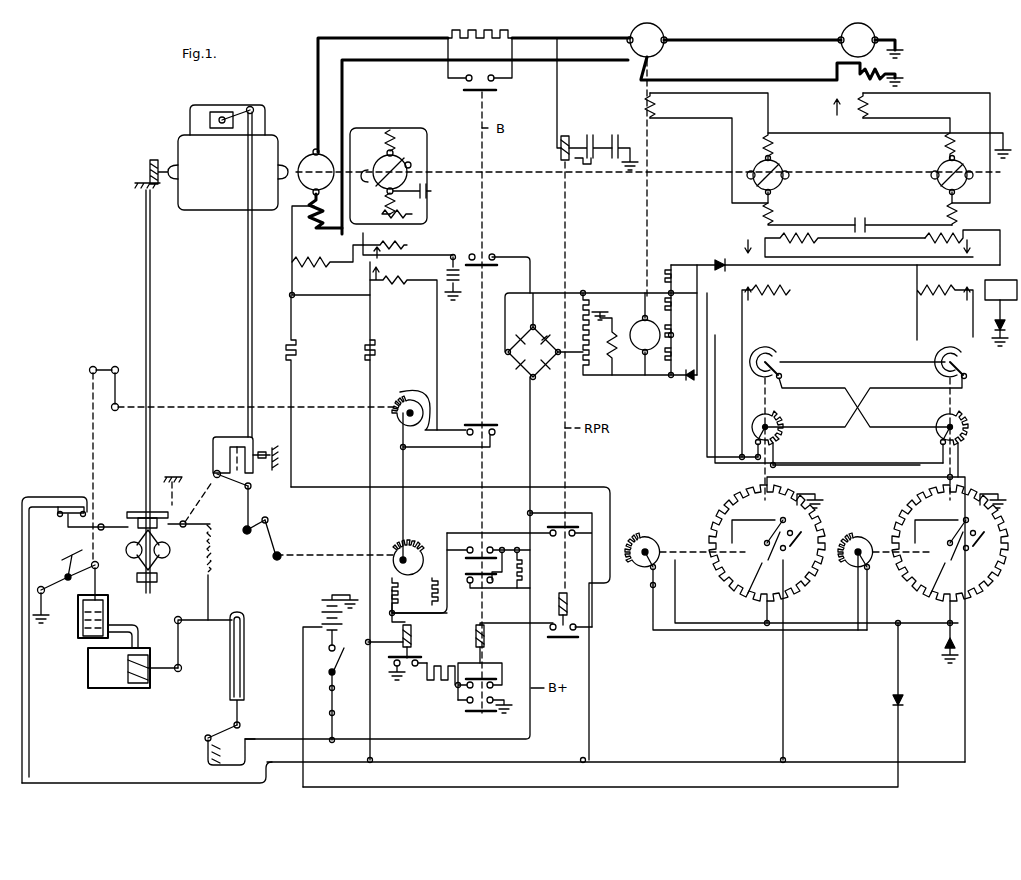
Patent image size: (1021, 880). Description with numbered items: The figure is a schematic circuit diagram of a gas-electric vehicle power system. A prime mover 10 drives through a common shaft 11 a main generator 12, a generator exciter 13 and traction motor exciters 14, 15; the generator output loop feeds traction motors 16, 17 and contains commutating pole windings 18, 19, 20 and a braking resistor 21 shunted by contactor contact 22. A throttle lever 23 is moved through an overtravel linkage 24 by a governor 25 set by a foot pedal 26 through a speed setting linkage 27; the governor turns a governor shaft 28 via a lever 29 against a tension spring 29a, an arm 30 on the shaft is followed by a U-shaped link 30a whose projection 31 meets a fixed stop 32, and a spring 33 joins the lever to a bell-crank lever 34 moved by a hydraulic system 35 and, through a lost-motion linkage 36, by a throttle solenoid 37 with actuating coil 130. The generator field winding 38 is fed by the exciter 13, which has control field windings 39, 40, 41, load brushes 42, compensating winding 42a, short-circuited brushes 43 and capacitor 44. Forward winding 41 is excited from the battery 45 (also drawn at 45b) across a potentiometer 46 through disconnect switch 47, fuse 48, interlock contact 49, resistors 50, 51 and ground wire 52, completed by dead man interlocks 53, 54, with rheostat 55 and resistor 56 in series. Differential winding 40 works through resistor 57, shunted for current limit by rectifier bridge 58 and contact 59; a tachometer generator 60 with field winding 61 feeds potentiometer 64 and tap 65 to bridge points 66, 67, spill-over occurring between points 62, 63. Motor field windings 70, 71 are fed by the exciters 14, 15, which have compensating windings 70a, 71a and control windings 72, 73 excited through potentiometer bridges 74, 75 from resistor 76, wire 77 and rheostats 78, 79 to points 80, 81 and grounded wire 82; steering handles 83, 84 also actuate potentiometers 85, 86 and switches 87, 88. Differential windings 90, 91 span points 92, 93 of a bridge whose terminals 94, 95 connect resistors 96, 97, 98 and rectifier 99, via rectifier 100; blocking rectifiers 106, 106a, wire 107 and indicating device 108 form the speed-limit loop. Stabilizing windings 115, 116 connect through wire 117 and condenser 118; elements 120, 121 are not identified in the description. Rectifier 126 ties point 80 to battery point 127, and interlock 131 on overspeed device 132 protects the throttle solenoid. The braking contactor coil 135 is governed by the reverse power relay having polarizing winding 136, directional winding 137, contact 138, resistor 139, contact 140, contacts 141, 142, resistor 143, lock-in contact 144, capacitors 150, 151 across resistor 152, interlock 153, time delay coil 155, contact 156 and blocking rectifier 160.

The prime mover 10 is at (180, 145).
The common shaft 11 is at (457, 172).
The main generator 12 is at (307, 172).
The generator exciter 13 is at (383, 168).
The traction motor exciter 14 is at (760, 166).
The traction motor exciter 15 is at (944, 166).
The traction motor 16 is at (632, 33).
The traction motor 17 is at (845, 32).
The commutating pole winding 18 is at (325, 211).
The commutating pole winding 19 is at (650, 72).
The commutating pole winding 20 is at (868, 70).
The braking resistor 21 is at (484, 30).
The contact 22 is at (496, 91).
The engine throttle lever 23 is at (248, 110).
The overtravel linkage 24 is at (204, 431).
The governor 25 is at (188, 549).
The foot pedal 26 is at (72, 555).
The speed setting linkage 27 is at (168, 647).
The governor shaft 28 is at (198, 505).
The lever 29 is at (212, 522).
The tension spring 29a is at (185, 487).
The arm 30 is at (222, 478).
The U-shaped link 30a is at (234, 437).
The projection 31 is at (262, 452).
The fixed stop 32 is at (269, 459).
The tension spring 33 is at (213, 555).
The bell-crank lever 34 is at (185, 618).
The hydraulic system 35 is at (85, 638).
The lost-motion linkage 36 is at (245, 657).
The throttle solenoid 37 is at (244, 736).
The main field exciting winding 38 is at (327, 256).
The stabilizing control field winding 39 is at (399, 218).
The differential control field winding 40 is at (409, 246).
The forward control field winding 41 is at (418, 347).
The current supply brushes 42 is at (400, 169).
The series load compensating winding 42a is at (405, 130).
The short circuited brushes 43 is at (411, 154).
The capacitor 44 is at (430, 191).
The battery 45 is at (361, 181).
The battery 45b is at (321, 612).
The governor controlled potentiometer 46 is at (422, 548).
The disconnect switch 47 is at (340, 665).
The protective fuse 48 is at (335, 700).
The interlock contact 49 is at (488, 561).
The resistor 50 is at (419, 597).
The resistor 51 is at (438, 591).
The ground wire 52 is at (632, 760).
The dead man interlock contact 53 is at (795, 534).
The dead man interlock contact 54 is at (978, 534).
The pedal controlled rheostat 55 is at (400, 392).
The fixed resistor 56 is at (376, 351).
The current limiting resistor 57 is at (462, 278).
The rectifier bridge 58 is at (533, 352).
The interlock contact 59 is at (494, 268).
The tachometer generator 60 is at (642, 320).
The field winding 61 is at (604, 343).
The bridge point 62 is at (546, 336).
The bridge point 63 is at (521, 375).
The potentiometer 64 is at (590, 300).
The variable voltage tap 65 is at (580, 385).
The bridge point 66 is at (518, 345).
The bridge point 67 is at (548, 366).
The field winding 70 is at (660, 108).
The series load compensating winding 70a is at (766, 140).
The field winding 71 is at (873, 108).
The series load compensating winding 71a is at (958, 140).
The main control field winding 72 is at (776, 370).
The main control field winding 73 is at (944, 302).
The potentiometer bridge 74 is at (722, 532).
The potentiometer bridge 75 is at (915, 533).
The resistor 76 is at (297, 351).
The wire 77 is at (450, 614).
The variable resistor 78 is at (644, 535).
The variable resistor 79 is at (856, 535).
The point 80 is at (762, 603).
The point 81 is at (945, 605).
The grounded wire 82 is at (872, 478).
The steering handle 83 is at (770, 530).
The steering handle 84 is at (953, 530).
The potentiometer 85 is at (786, 418).
The potentiometer 86 is at (970, 418).
The switch 87 is at (785, 376).
The switch 88 is at (970, 370).
The differential control field winding 90 is at (859, 245).
The differential control field winding 91 is at (952, 247).
The intermediate bridge point 92 is at (700, 265).
The intermediate bridge point 93 is at (680, 329).
The line terminal 94 is at (661, 295).
The line terminal 95 is at (668, 385).
The resistor 96 is at (680, 302).
The resistor 97 is at (680, 351).
The resistor 98 is at (680, 275).
The rectifier 99 is at (691, 383).
The rectifier 100 is at (731, 255).
The blocking rectifier 106 is at (995, 324).
The blocking rectifier 106a is at (508, 382).
The wire 107 is at (548, 293).
The speed indicating device 108 is at (1001, 300).
The stabilizing control field winding 115 is at (780, 214).
The stabilizing control field winding 116 is at (965, 216).
The wire 117 is at (868, 136).
The condenser 118 is at (860, 217).
The solenoid 120 is at (778, 350).
The solenoid 121 is at (947, 350).
The blocking rectifier 126 is at (893, 698).
The battery point 127 is at (329, 632).
The actuating coil 130 is at (250, 748).
The interlock contact 131 is at (70, 505).
The overspeed device 132 is at (105, 530).
The actuating coil 135 is at (486, 638).
The polarizing winding 136 is at (559, 606).
The directional winding 137 is at (565, 135).
The interlock contact 138 is at (488, 584).
The resistor 139 is at (523, 569).
The interlock contact 140 is at (570, 643).
The interlock contact 141 is at (498, 676).
The interlock contact 142 is at (413, 660).
The current limiting resistor 143 is at (441, 683).
The interlock contact 144 is at (485, 714).
The capacitor 150 is at (590, 130).
The capacitor 151 is at (618, 130).
The resistor 152 is at (589, 159).
The interlock 153 is at (470, 425).
The actuating coil 155 is at (412, 641).
The interlock contact 156 is at (562, 525).
The blocking rectifier 160 is at (945, 643).